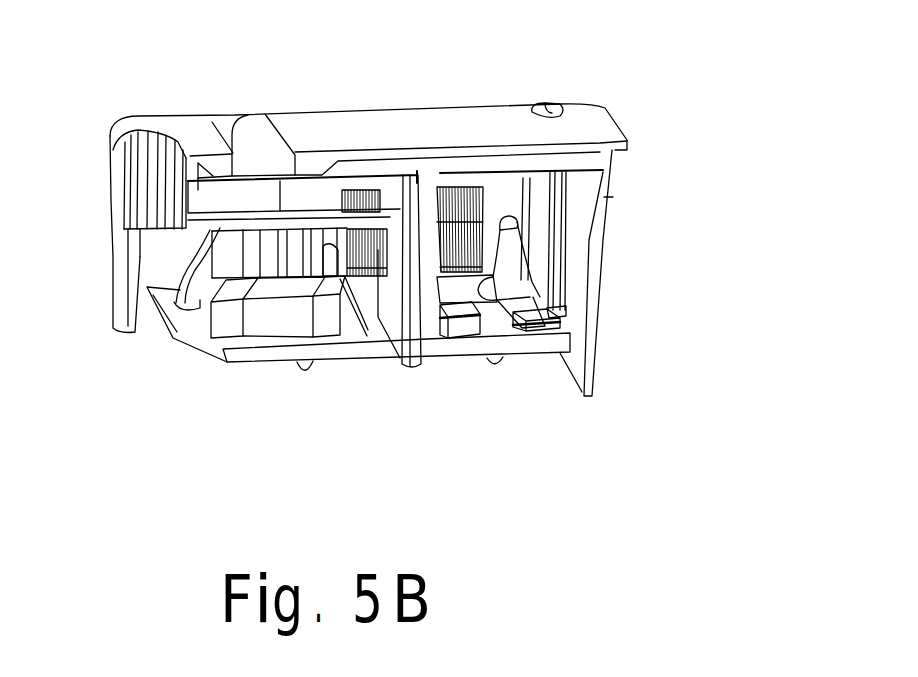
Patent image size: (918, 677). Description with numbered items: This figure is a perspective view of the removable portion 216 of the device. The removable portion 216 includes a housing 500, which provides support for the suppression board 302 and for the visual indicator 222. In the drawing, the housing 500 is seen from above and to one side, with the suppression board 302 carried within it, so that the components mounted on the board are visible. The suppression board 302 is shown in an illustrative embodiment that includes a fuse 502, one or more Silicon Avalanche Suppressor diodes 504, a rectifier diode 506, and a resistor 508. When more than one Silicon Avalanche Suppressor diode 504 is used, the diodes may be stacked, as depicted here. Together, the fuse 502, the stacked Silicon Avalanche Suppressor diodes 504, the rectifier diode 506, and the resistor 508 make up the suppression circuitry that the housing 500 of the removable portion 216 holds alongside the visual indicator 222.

The removable portion 216 is at (699, 55).
The visual indicator 222 is at (212, 121).
The housing 500 is at (348, 113).
The Silicon Avalanche Suppressor diode 504 is at (467, 203).
The fuse 502 is at (228, 332).
The suppression board 302 is at (366, 355).
The rectifier diode 506 is at (470, 335).
The resistor 508 is at (530, 327).